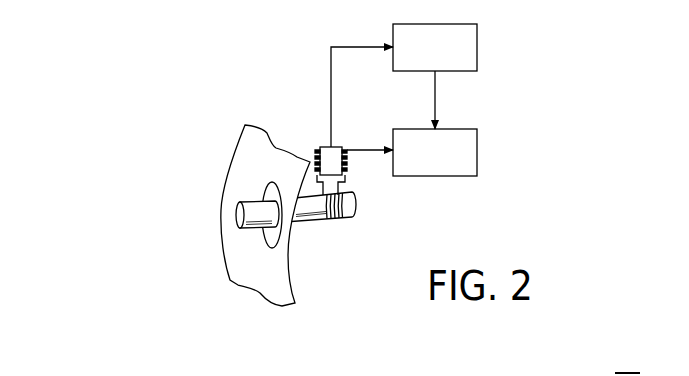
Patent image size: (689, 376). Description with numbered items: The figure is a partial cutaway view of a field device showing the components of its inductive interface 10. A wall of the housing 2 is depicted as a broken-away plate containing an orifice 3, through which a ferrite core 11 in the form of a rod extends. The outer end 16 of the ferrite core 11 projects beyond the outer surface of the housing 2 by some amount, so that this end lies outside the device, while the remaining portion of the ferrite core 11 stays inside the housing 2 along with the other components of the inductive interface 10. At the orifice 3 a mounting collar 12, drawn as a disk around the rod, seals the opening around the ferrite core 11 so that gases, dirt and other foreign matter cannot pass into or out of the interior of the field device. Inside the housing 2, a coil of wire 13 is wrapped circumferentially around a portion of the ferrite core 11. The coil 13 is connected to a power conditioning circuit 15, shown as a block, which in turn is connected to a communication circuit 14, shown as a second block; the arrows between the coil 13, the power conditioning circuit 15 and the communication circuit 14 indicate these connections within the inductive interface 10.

The housing 2 is at (273, 152).
The orifice 3 is at (273, 248).
The inductive interface 10 is at (247, 175).
The ferrite core 11 is at (240, 201).
The mounting collar 12 is at (272, 232).
The coil of wire 13 is at (334, 222).
The communication circuit 14 is at (443, 169).
The power conditioning circuit 15 is at (443, 65).
The outer end 16 is at (243, 216).